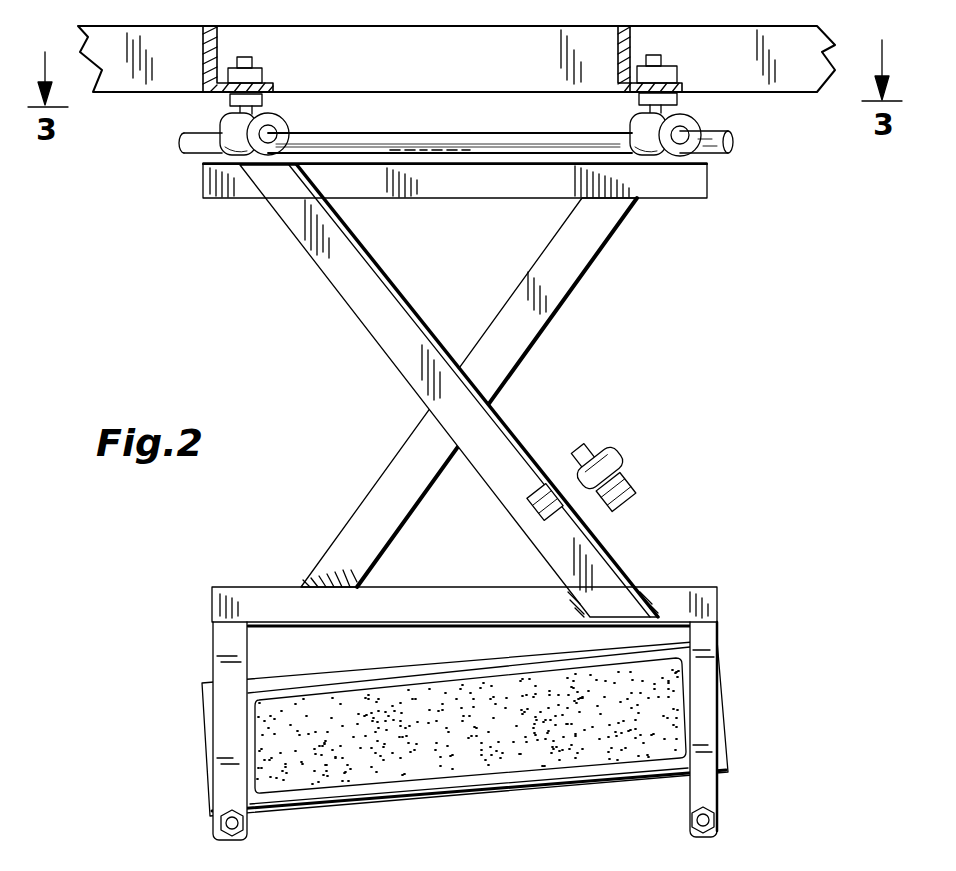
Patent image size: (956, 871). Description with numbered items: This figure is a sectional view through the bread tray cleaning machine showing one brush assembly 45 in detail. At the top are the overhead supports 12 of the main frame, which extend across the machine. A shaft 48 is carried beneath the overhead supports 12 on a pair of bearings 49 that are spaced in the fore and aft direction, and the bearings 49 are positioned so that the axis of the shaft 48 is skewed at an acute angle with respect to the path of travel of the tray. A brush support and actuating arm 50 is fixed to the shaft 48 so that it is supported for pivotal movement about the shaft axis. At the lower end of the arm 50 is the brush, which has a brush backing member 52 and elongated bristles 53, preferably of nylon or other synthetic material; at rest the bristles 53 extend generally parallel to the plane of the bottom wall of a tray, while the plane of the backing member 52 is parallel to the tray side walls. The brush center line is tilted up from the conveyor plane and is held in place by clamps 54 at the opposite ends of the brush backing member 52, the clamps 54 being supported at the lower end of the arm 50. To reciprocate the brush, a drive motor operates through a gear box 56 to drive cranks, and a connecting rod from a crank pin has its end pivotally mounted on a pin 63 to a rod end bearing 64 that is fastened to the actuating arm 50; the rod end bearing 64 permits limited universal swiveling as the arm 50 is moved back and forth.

The overhead supports 12 is at (476, 59).
The brush assembly 45 is at (256, 210).
The shaft 48 is at (733, 143).
The bearings 49 is at (266, 114).
The brush support and actuating arm 50 is at (526, 439).
The brush backing member 52 is at (474, 790).
The bristles 53 is at (573, 750).
The clamps 54 is at (215, 653).
The gear box 56 is at (636, 482).
The pin 63 is at (588, 440).
The rod end bearing 64 is at (621, 457).